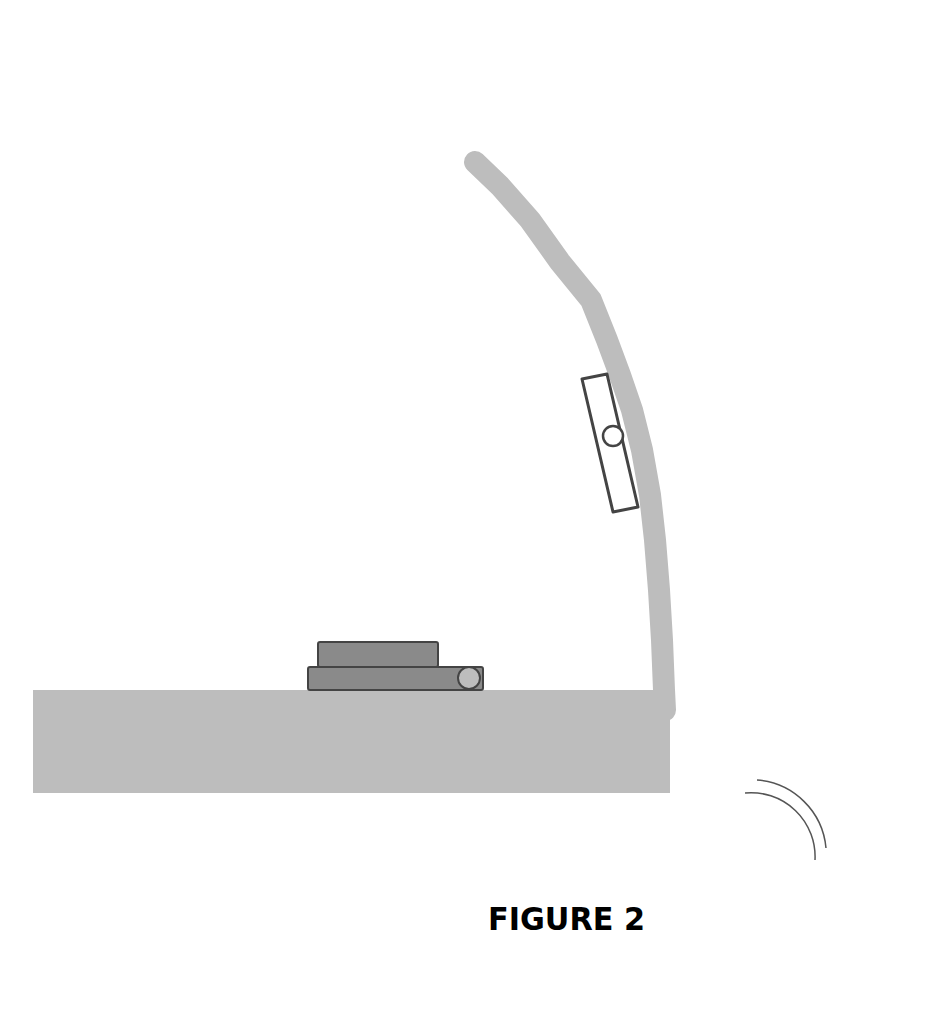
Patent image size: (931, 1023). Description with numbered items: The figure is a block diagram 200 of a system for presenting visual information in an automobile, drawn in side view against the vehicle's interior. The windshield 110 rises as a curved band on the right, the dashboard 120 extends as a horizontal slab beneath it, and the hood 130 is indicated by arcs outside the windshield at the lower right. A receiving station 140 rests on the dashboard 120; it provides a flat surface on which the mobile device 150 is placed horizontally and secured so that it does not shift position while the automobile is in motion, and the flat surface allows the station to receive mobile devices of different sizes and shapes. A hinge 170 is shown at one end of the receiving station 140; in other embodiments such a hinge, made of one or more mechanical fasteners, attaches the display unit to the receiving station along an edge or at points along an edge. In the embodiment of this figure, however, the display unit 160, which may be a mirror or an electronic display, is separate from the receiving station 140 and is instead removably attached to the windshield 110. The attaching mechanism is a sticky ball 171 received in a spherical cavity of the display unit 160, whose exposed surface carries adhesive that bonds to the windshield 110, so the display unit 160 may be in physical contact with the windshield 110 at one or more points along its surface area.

The block diagram 200 is at (537, 70).
The windshield 110 is at (573, 287).
The dashboard 120 is at (425, 778).
The hood 130 is at (780, 778).
The receiving station 140 is at (307, 673).
The mobile device 150 is at (373, 640).
The display unit 160 is at (593, 433).
The hinge 170 is at (488, 673).
The sticky ball 171 is at (620, 430).